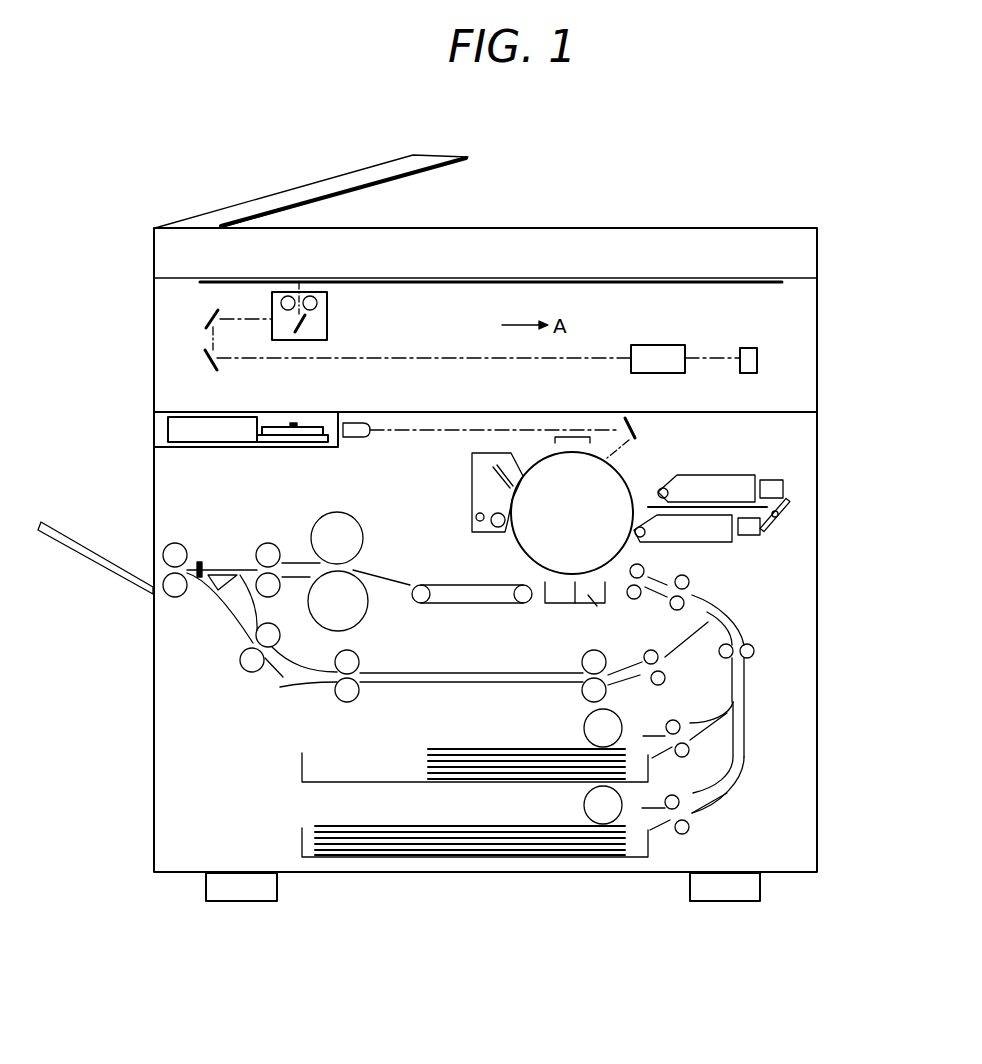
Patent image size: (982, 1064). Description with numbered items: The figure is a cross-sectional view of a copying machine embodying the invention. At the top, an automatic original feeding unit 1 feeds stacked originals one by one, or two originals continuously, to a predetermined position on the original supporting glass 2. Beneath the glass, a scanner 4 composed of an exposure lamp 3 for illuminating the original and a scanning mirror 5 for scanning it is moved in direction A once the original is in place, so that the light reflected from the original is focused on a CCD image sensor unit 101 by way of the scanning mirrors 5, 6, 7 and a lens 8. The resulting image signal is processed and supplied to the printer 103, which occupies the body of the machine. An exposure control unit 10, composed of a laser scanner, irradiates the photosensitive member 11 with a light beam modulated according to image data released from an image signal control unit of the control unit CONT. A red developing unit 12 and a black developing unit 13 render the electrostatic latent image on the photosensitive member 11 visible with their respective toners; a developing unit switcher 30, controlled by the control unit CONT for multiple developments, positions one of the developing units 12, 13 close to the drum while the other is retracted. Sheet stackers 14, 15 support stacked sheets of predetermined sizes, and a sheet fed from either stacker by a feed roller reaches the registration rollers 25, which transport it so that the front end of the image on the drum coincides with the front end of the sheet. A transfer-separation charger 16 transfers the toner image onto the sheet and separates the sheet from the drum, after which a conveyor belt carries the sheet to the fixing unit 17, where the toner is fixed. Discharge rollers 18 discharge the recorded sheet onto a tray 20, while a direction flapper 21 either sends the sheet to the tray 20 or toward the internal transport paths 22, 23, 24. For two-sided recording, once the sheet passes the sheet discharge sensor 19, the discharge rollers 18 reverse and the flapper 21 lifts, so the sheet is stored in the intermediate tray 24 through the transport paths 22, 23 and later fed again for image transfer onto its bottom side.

The automatic original feeding unit 1 is at (242, 203).
The original supporting glass 2 is at (758, 280).
The exposure lamp 3 is at (312, 294).
The scanner 4 is at (327, 300).
The scanning mirror 5 is at (327, 321).
The scanning mirror 6 is at (205, 315).
The scanning mirror 7 is at (204, 357).
The lens 8 is at (655, 345).
The CCD image sensor unit 101 is at (757, 360).
The control unit CONT is at (170, 430).
The exposure control unit 10 is at (268, 426).
The photosensitive member 11 is at (627, 482).
The red developing unit 12 is at (722, 477).
The black developing unit 13 is at (722, 542).
The developing unit switcher 30 is at (788, 502).
The fixing unit 17 is at (358, 588).
The discharge rollers 18 is at (163, 552).
The sheet discharge sensor 19 is at (200, 560).
The tray 20 is at (100, 566).
The direction flapper 21 is at (222, 575).
The transport path 22 is at (247, 630).
The transport path 23 is at (320, 683).
The intermediate tray 24 is at (457, 682).
The registration rollers 25 is at (643, 565).
The transfer-separation charger 16 is at (593, 603).
The sheet stacker 14 is at (642, 770).
The sheet stacker 15 is at (642, 843).
The printer 103 is at (242, 795).